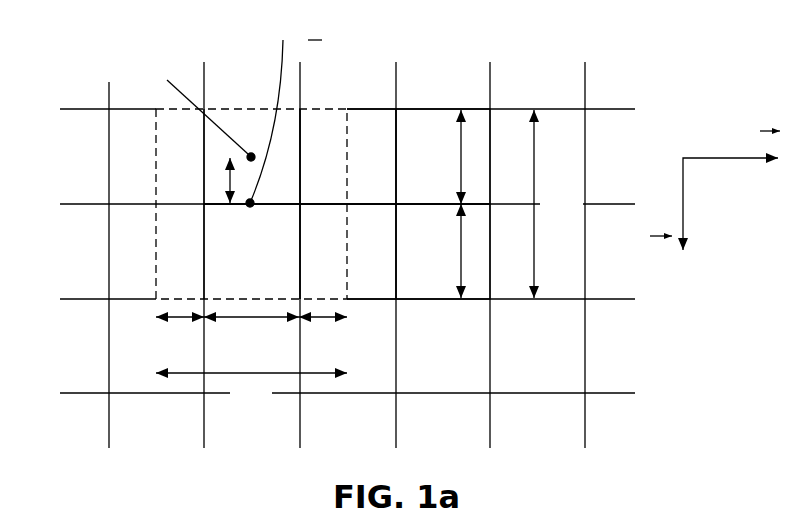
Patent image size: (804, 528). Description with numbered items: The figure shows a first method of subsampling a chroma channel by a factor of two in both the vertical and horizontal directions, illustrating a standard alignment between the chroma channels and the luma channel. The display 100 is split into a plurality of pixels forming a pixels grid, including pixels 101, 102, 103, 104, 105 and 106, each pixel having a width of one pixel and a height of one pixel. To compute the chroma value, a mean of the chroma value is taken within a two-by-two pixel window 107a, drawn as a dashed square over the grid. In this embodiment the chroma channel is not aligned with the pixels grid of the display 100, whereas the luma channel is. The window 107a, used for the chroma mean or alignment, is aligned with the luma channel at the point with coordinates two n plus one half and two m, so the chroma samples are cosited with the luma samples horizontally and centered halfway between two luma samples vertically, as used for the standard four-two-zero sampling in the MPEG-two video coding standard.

The display 100 is at (660, 83).
The pixel 101 is at (227, 117).
The pixel 102 is at (355, 118).
The pixel 103 is at (433, 118).
The pixel 104 is at (222, 260).
The pixel 105 is at (367, 282).
The pixel 106 is at (482, 282).
The window 107a is at (155, 157).